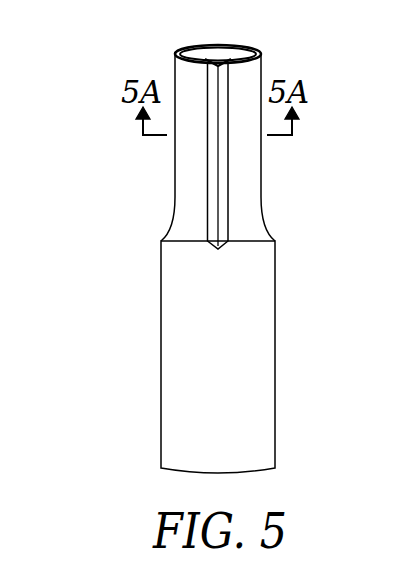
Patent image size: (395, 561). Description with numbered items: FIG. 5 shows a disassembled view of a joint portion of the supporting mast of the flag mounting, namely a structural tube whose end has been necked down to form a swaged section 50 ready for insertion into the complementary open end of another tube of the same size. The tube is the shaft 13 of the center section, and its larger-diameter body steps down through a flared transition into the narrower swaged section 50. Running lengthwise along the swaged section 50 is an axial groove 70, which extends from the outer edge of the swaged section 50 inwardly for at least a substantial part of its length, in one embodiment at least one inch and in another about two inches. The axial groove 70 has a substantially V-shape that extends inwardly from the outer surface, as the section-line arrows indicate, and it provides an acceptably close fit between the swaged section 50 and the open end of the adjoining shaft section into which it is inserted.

The shaft 13 is at (182, 355).
The swaged section 50 is at (193, 188).
The axial groove 70 is at (213, 89).